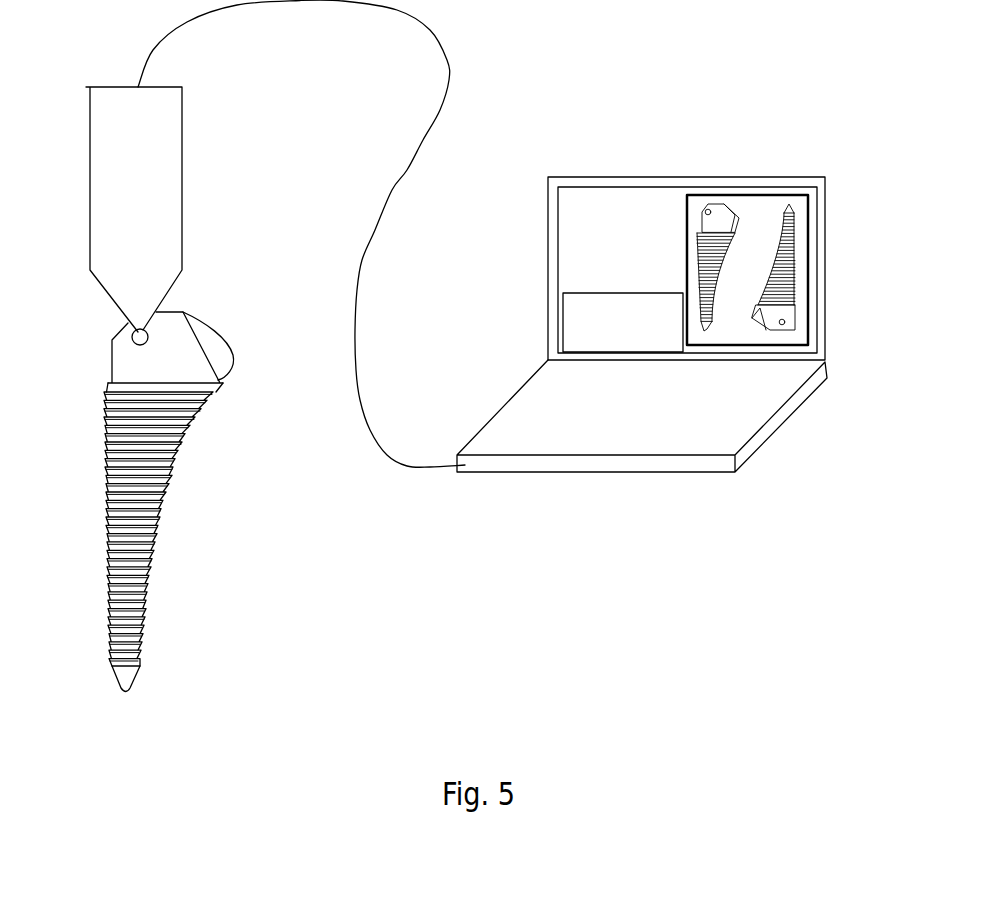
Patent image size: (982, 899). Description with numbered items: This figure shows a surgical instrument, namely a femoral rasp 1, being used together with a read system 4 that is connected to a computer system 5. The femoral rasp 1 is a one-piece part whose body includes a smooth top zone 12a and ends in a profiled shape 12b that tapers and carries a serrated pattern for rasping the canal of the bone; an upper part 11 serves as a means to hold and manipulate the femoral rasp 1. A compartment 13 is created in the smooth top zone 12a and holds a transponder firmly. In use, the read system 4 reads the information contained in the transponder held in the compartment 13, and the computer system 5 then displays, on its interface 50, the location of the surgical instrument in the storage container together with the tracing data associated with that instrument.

The femoral rasp 1 is at (171, 502).
The read system 4 is at (157, 140).
The computer system 5 is at (682, 167).
The upper part 11 is at (220, 350).
The smooth top zone 12a is at (200, 373).
The profiled shape 12b is at (163, 472).
The compartment 13 is at (133, 341).
The interface 50 is at (812, 250).